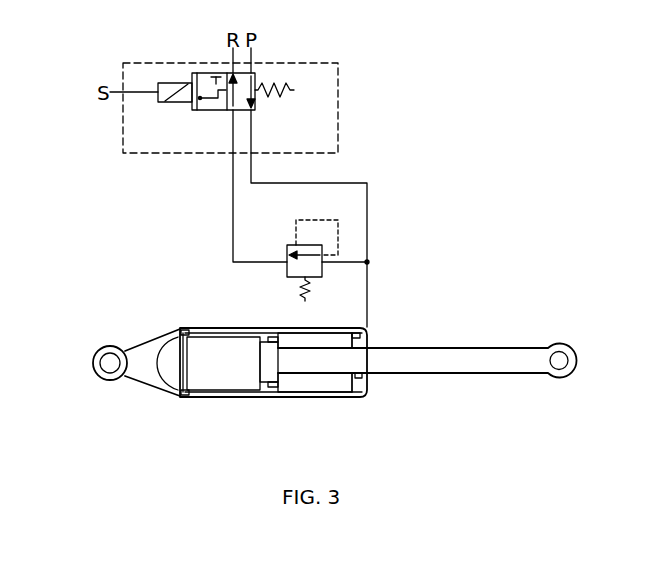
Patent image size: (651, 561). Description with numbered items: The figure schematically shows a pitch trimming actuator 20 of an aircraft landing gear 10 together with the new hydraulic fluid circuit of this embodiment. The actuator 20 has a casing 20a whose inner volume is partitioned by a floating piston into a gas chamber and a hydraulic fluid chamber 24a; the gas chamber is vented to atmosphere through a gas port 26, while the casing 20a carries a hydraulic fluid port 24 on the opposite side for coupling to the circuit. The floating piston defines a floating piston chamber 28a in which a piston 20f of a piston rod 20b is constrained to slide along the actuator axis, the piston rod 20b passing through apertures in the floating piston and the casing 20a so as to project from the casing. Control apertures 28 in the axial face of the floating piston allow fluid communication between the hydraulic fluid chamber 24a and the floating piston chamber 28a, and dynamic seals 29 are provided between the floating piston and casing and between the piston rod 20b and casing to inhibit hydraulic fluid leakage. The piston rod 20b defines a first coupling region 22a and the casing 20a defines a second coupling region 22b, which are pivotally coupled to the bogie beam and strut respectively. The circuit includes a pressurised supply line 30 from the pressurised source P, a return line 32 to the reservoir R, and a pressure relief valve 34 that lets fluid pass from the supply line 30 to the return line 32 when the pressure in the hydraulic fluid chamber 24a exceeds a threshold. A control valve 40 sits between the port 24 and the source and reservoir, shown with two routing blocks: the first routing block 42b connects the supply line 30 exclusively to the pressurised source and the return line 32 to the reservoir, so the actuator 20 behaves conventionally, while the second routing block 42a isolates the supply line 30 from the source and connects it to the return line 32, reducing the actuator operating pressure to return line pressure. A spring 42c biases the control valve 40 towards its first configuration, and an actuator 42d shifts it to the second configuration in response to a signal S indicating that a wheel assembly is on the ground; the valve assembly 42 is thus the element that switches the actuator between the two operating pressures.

The landing gear 10 is at (478, 282).
The pitch trimming actuator 20 is at (312, 379).
The casing 20a is at (173, 397).
The piston rod 20b is at (417, 362).
The piston 20f is at (262, 358).
The first coupling region 22a is at (556, 372).
The second coupling region 22b is at (96, 357).
The hydraulic fluid port 24 is at (360, 345).
The hydraulic fluid chamber 24a is at (327, 385).
The gas port 26 is at (170, 333).
The control apertures 28 is at (276, 379).
The floating piston chamber 28a is at (206, 375).
The dynamic seal 29 is at (185, 330).
The pressurised supply line 30 is at (352, 183).
The return line 32 is at (232, 238).
The pressure relief valve 34 is at (338, 237).
The control valve 40 is at (344, 96).
The solenoid valve 42 is at (208, 108).
The second routing block 42a is at (210, 80).
The first routing block 42b is at (243, 79).
The spring 42c is at (291, 96).
The actuator 42d is at (168, 99).